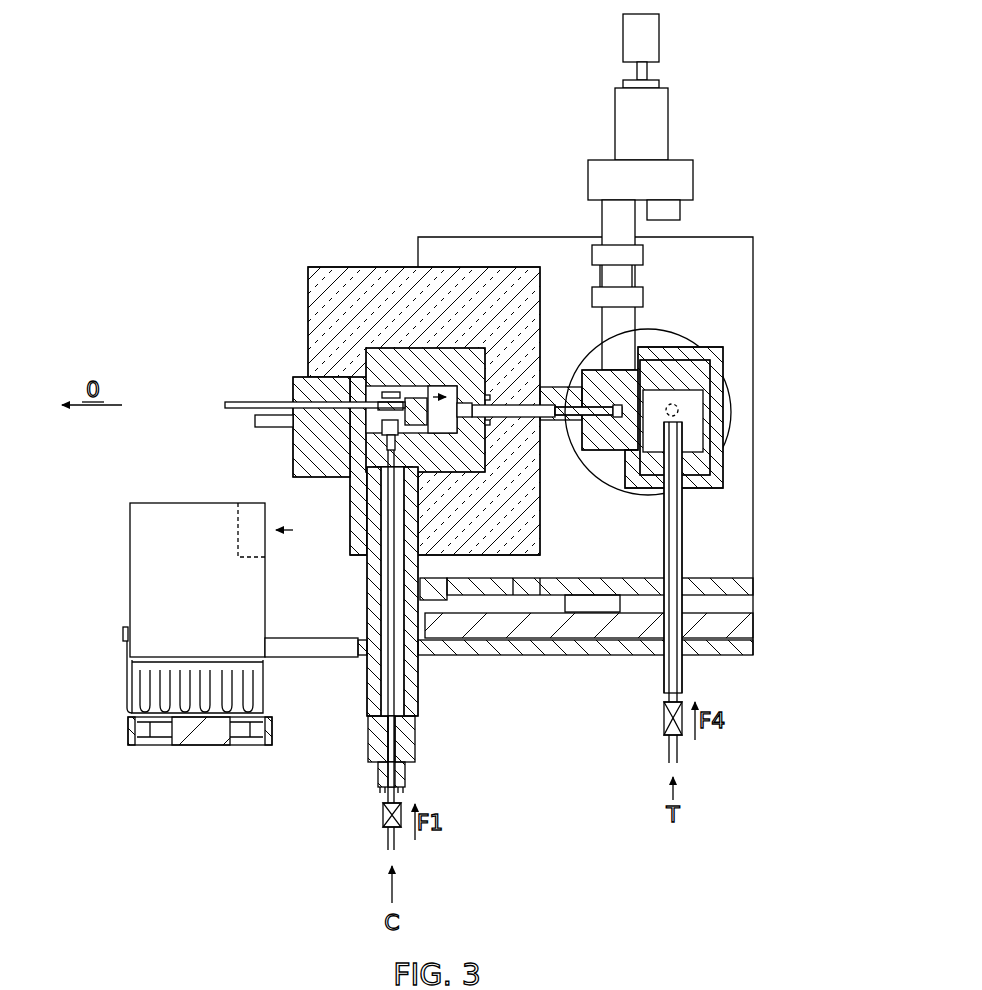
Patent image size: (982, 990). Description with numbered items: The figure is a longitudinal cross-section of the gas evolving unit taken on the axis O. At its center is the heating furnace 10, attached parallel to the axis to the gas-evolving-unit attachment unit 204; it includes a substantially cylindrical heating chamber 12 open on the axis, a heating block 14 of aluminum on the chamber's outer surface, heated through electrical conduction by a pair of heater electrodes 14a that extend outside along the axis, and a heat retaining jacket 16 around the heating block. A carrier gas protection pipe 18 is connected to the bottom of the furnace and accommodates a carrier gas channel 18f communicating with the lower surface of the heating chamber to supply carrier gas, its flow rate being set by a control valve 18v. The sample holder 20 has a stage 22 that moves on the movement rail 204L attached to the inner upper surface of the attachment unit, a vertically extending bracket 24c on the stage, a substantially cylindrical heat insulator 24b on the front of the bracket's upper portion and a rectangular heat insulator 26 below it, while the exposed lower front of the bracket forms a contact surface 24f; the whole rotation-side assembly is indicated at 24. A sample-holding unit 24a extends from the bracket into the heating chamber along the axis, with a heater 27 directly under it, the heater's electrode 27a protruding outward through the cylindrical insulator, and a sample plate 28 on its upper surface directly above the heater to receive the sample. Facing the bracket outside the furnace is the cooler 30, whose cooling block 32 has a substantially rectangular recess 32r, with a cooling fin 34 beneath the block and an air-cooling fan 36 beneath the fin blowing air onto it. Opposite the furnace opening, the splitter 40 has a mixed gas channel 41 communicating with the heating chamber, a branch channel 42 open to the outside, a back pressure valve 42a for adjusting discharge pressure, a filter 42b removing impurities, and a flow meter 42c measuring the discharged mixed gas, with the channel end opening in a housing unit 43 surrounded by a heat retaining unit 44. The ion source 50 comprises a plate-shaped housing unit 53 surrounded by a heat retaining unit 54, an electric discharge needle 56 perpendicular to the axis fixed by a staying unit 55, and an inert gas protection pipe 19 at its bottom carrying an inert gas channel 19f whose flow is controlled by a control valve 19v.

The heating furnace 10 is at (355, 267).
The heating chamber 12 is at (460, 435).
The heating block 14 is at (398, 430).
The heater electrodes 14a is at (255, 418).
The heat retaining jacket 16 is at (542, 478).
The carrier gas protection pipe 18 is at (365, 690).
The carrier gas channel 18f is at (396, 690).
The control valve 18v is at (385, 812).
The inert gas protection pipe 19 is at (664, 680).
The inert gas channel 19f is at (677, 664).
The control valve 19v is at (665, 730).
The sample holder 20 is at (272, 378).
The stage 22 is at (753, 590).
The rotation mechanism 24 is at (235, 452).
The sample-holding unit 24a is at (428, 390).
The heat insulator 24b is at (292, 440).
The bracket 24c is at (362, 557).
The contact surface 24f is at (348, 497).
The heat insulator 26 is at (300, 376).
The heater 27 is at (416, 398).
The electrode 27a is at (237, 402).
The sample plate 28 is at (390, 392).
The cooler 30 is at (64, 625).
The cooling block 32 is at (135, 607).
The recess 32r is at (247, 527).
The cooling fin 34 is at (135, 687).
The air-cooling fan 36 is at (130, 735).
The splitter 40 is at (800, 195).
The mixed gas channel 41 is at (602, 355).
The branch channel 42 is at (628, 227).
The back pressure valve 42a is at (655, 130).
The filter 42b is at (593, 263).
The flow meter 42c is at (563, 263).
The housing unit 43 is at (640, 368).
The heat retaining unit 44 is at (693, 377).
The ion source 50 is at (800, 330).
The housing unit 53 is at (695, 378).
The heat retaining unit 54 is at (727, 360).
The staying unit 55 is at (688, 440).
The electric discharge needle 56 is at (678, 408).
The gas-evolving-unit attachment unit 204 is at (753, 520).
The movement rail 204L is at (753, 628).